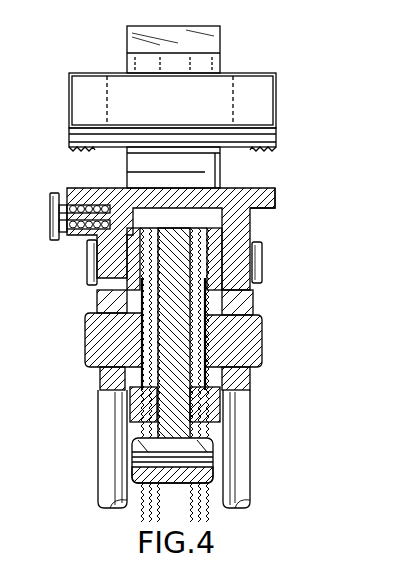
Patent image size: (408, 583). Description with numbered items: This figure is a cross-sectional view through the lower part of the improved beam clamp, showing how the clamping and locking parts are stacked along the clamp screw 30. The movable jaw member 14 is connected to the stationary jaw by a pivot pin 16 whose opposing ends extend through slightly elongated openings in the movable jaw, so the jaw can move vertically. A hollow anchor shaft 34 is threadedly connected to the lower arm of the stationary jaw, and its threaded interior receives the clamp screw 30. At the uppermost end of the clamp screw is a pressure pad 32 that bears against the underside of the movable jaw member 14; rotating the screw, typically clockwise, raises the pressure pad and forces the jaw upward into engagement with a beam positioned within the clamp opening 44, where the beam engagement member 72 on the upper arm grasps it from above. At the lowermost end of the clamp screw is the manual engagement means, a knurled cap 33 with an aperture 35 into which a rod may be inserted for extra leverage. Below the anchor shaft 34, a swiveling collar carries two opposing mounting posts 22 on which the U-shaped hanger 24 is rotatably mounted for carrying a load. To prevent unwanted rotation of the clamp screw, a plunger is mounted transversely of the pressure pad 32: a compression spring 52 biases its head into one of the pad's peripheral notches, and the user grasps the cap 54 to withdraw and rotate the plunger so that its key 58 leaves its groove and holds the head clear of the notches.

The beam engagement member 72 is at (182, 111).
The clamp opening 44 is at (78, 168).
The compression spring 52 is at (92, 206).
The cap 54 is at (51, 222).
The key 58 is at (66, 233).
The pressure pad 32 is at (186, 208).
The movable jaw member 14 is at (274, 207).
The pivot pin 16 is at (262, 262).
The clamp screw 30 is at (218, 300).
The mounting posts 22 is at (262, 347).
The anchor shaft 34 is at (137, 413).
The knurled cap 33 is at (137, 477).
The aperture 35 is at (200, 453).
The U-shaped hanger 24 is at (108, 482).